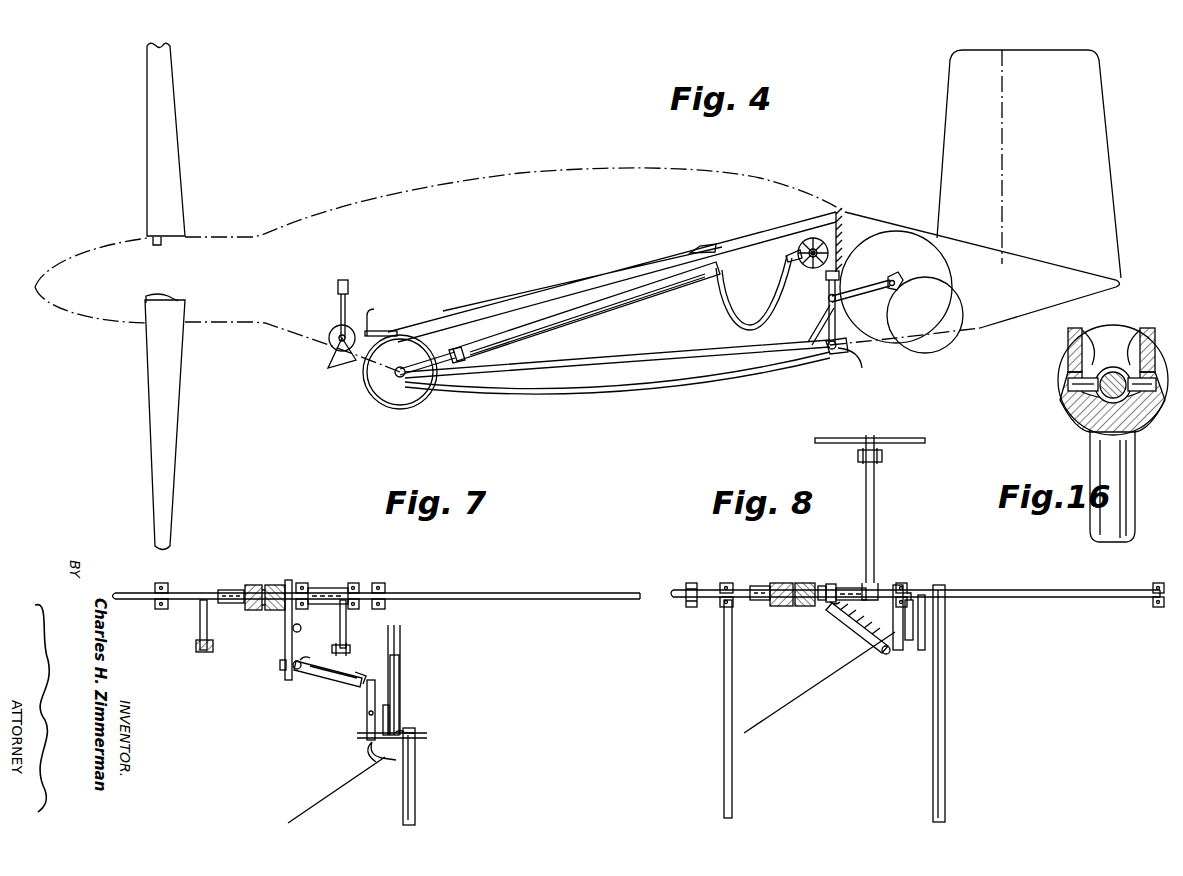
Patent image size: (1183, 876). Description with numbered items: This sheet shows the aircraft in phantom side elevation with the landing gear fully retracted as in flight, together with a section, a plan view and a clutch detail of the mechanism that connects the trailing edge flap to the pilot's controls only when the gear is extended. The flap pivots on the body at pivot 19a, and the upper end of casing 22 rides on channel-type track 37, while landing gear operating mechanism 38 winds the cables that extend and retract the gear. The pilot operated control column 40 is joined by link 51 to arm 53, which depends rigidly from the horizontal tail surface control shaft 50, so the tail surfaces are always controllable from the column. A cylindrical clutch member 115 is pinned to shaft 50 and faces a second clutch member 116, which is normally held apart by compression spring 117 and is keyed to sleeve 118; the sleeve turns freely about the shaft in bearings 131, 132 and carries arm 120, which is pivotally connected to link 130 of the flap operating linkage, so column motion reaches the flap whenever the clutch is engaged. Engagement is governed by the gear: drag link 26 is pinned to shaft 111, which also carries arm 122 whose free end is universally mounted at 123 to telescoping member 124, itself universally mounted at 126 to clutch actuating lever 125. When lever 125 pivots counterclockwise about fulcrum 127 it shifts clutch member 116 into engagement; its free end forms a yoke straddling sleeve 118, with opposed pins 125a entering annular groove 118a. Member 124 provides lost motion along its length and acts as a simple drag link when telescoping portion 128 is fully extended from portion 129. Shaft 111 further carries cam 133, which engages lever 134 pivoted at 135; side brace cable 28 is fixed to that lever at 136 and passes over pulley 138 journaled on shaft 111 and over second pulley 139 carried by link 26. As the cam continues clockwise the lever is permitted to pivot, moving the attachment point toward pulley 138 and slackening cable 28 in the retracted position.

In FIG. 4, the flap pivot 19a is at (903, 276).
In FIG. 4, the casing 22 is at (548, 322).
In FIG. 4, the drag link 26 is at (645, 346).
In FIG. 7, the drag link 26 is at (416, 794).
In FIG. 8, the drag link 26 is at (948, 706).
In FIG. 7, the side brace cable 28 is at (320, 800).
In FIG. 8, the side brace cable 28 is at (795, 706).
In FIG. 4, the channel-type track 37 is at (720, 272).
In FIG. 4, the landing gear operating mechanism 38 is at (335, 325).
In FIG. 4, the control column 40 is at (372, 312).
In FIG. 4, the horizontal tail surface control shaft 50 is at (826, 276).
In FIG. 16, the horizontal tail surface control shaft 50 is at (1118, 374).
In FIG. 7, the horizontal tail surface control shaft 50 is at (508, 592).
In FIG. 8, the horizontal tail surface control shaft 50 is at (1040, 589).
In FIG. 4, the link 51 is at (420, 330).
In FIG. 7, the link 51 is at (207, 653).
In FIG. 8, the link 51 is at (733, 782).
In FIG. 7, the arm 53 is at (200, 627).
In FIG. 8, the arm 53 is at (722, 584).
In FIG. 4, the shaft 111 is at (842, 356).
In FIG. 7, the shaft 111 is at (420, 734).
In FIG. 7, the clutch member 115 is at (253, 584).
In FIG. 8, the clutch member 115 is at (781, 583).
In FIG. 16, the second clutch member 116 is at (1130, 335).
In FIG. 7, the second clutch member 116 is at (277, 584).
In FIG. 8, the second clutch member 116 is at (806, 583).
In FIG. 7, the compression spring 117 is at (268, 611).
In FIG. 16, the sleeve 118 is at (1097, 345).
In FIG. 7, the sleeve 118 is at (316, 588).
In FIG. 16, the annular groove 118a is at (1092, 402).
In FIG. 7, the arm 120 is at (340, 633).
In FIG. 7, the arm 122 is at (369, 713).
In FIG. 8, the arm 122 is at (892, 655).
In FIG. 7, the universal mounting 123 is at (370, 678).
In FIG. 7, the telescoping member 124 is at (332, 682).
In FIG. 8, the telescoping member 124 is at (852, 629).
In FIG. 16, the clutch actuating lever 125 is at (1098, 528).
In FIG. 7, the clutch actuating lever 125 is at (285, 648).
In FIG. 8, the clutch actuating lever 125 is at (832, 584).
In FIG. 16, the opposed pins 125a is at (1070, 383).
In FIG. 7, the universal mounting 126 is at (290, 666).
In FIG. 7, the fulcrum 127 is at (293, 629).
In FIG. 7, the telescoping portion 128 is at (312, 672).
In FIG. 7, the portion 129 is at (342, 684).
In FIG. 4, the link 130 is at (858, 287).
In FIG. 8, the link 130 is at (876, 510).
In FIG. 7, the bearing 131 is at (302, 581).
In FIG. 8, the bearing 131 is at (830, 605).
In FIG. 7, the bearing 132 is at (354, 581).
In FIG. 8, the bearing 132 is at (868, 600).
In FIG. 4, the cam 133 is at (848, 350).
In FIG. 7, the cam 133 is at (398, 706).
In FIG. 4, the lever 134 is at (824, 320).
In FIG. 7, the lever 134 is at (404, 678).
In FIG. 8, the lever 134 is at (921, 655).
In FIG. 4, the pivot 135 is at (840, 298).
In FIG. 7, the pivot 135 is at (404, 660).
In FIG. 8, the cable attachment point 136 is at (910, 642).
In FIG. 4, the pulley 138 is at (828, 352).
In FIG. 7, the pulley 138 is at (370, 738).
In FIG. 7, the second pulley 139 is at (378, 758).